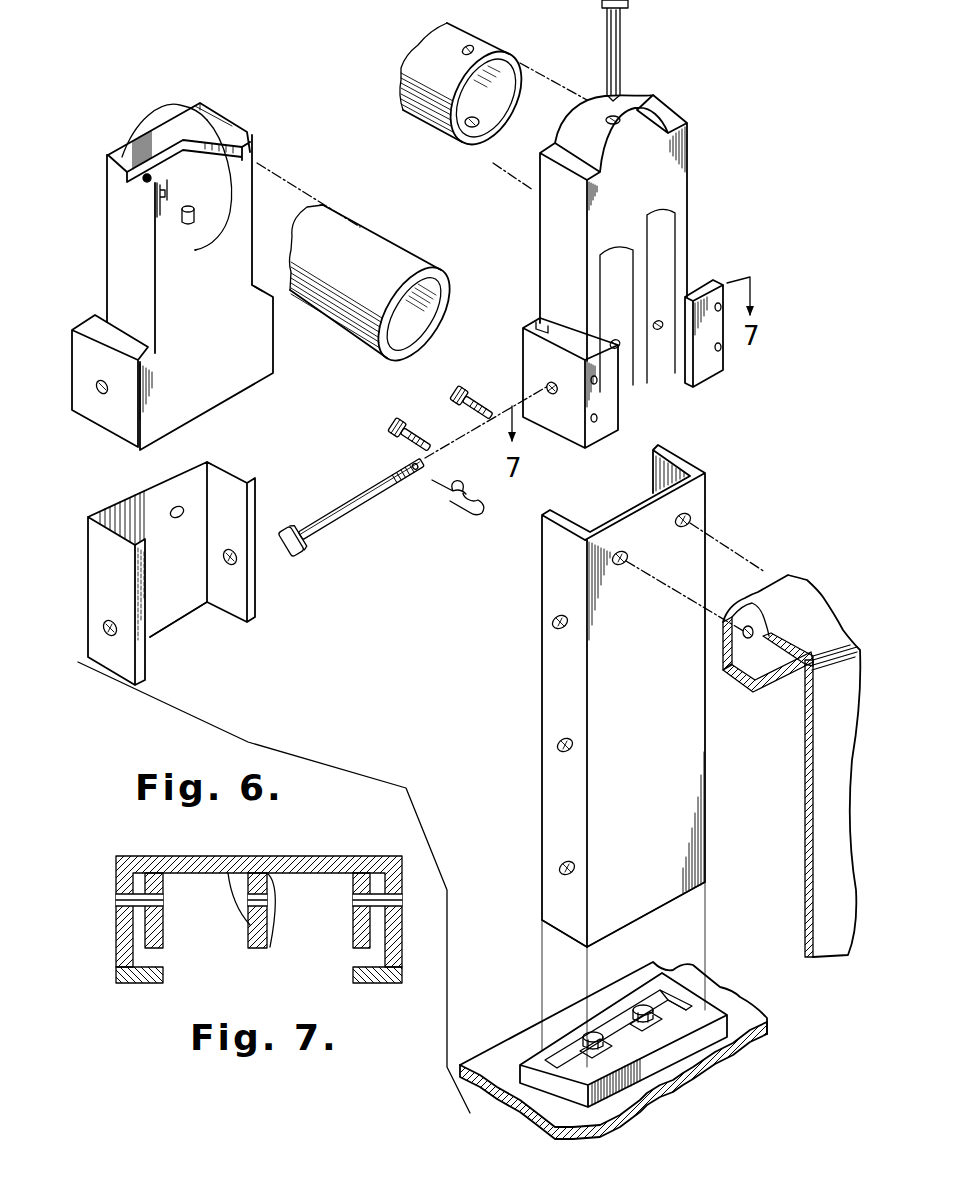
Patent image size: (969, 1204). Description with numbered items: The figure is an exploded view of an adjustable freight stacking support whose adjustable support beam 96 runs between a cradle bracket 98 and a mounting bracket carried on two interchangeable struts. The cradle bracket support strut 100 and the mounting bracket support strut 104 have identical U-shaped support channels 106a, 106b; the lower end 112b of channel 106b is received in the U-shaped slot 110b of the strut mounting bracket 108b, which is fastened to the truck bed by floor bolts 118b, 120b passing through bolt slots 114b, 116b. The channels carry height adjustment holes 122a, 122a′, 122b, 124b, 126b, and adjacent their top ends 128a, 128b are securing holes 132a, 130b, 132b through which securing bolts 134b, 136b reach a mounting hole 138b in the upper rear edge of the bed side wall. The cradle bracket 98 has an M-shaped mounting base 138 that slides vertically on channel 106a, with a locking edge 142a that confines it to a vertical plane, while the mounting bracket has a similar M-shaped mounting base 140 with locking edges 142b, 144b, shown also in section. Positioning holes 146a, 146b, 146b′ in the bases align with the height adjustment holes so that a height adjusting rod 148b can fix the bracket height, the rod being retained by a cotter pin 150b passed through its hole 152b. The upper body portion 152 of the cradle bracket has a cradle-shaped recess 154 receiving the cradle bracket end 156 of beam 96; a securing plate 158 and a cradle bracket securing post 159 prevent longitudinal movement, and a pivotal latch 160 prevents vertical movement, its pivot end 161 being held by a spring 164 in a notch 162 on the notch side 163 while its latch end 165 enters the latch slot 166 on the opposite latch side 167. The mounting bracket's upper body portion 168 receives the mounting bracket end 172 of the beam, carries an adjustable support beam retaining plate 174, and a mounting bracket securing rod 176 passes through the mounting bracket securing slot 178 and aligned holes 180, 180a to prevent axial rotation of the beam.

In FIG. 6, the cradle bracket 98 is at (197, 85).
In FIG. 6, the securing plate 158 is at (170, 127).
In FIG. 6, the pivotal latch 160 is at (199, 129).
In FIG. 6, the pivot end 161 is at (152, 137).
In FIG. 6, the upper body portion 152 is at (99, 225).
In FIG. 6, the latch slot 166 is at (253, 150).
In FIG. 6, the latch side 167 is at (259, 168).
In FIG. 6, the latch end 165 is at (232, 153).
In FIG. 6, the notch side 163 is at (168, 202).
In FIG. 6, the spring 164 is at (147, 182).
In FIG. 6, the notch 162 is at (156, 194).
In FIG. 6, the cradle bracket securing post 159 is at (195, 224).
In FIG. 6, the cradle-shaped recess 154 is at (178, 254).
In FIG. 6, the locking edge 142a is at (74, 315).
In FIG. 6, the M-shaped mounting base 138 is at (233, 367).
In FIG. 6, the positioning hole 146a is at (101, 400).
In FIG. 6, the cradle bracket support strut 100 is at (101, 566).
In FIG. 6, the top end 128a is at (197, 483).
In FIG. 6, the securing hole 132a is at (183, 518).
In FIG. 6, the height adjustment hole 122a′ is at (239, 568).
In FIG. 6, the height adjustment hole 122a is at (111, 640).
In FIG. 6, the U-shaped support channel 106a is at (175, 603).
In FIG. 6, the cradle bracket end 156 is at (362, 268).
In FIG. 6, the adjustable support beam 96 is at (398, 262).
In FIG. 6, the securing bolt 134b is at (392, 425).
In FIG. 6, the securing bolt 136b is at (452, 394).
In FIG. 6, the height adjusting rod 148b is at (360, 508).
In FIG. 6, the hole 152b is at (417, 474).
In FIG. 6, the cotter pin 150b is at (470, 513).
In FIG. 6, the mounting bracket end 172 is at (462, 61).
In FIG. 6, the hole 180 is at (473, 46).
In FIG. 6, the hole 180a is at (467, 129).
In FIG. 6, the mounting bracket securing rod 176 is at (618, 43).
In FIG. 6, the mounting bracket securing slot 178 is at (622, 116).
In FIG. 6, the adjustable support beam retaining plate 174 is at (651, 216).
In FIG. 6, the upper body portion 168 is at (696, 195).
In FIG. 6, the M-shaped mounting base 140 is at (697, 262).
In FIG. 7, the M-shaped mounting base 140 is at (273, 846).
In FIG. 6, the positioning hole 146b is at (548, 382).
In FIG. 7, the positioning hole 146b is at (114, 904).
In FIG. 6, the locking edge 142b is at (603, 430).
In FIG. 7, the locking edge 142b is at (140, 984).
In FIG. 6, the locking edge 144b is at (713, 364).
In FIG. 7, the locking edge 144b is at (380, 985).
In FIG. 6, the positioning hole 146b′ is at (619, 350).
In FIG. 7, the positioning hole 146b′ is at (243, 903).
In FIG. 6, the mounting bracket support strut 104 is at (750, 496).
In FIG. 6, the securing hole 132b is at (692, 520).
In FIG. 6, the securing hole 130b is at (625, 562).
In FIG. 6, the height adjustment hole 122b is at (553, 626).
In FIG. 6, the top end 128b is at (658, 651).
In FIG. 6, the mounting hole 138b is at (750, 638).
In FIG. 6, the U-shaped support channel 106b is at (632, 748).
In FIG. 6, the height adjustment hole 124b is at (559, 753).
In FIG. 6, the lower end 112b is at (664, 855).
In FIG. 6, the height adjustment hole 126b is at (560, 871).
In FIG. 6, the bolt slot 116b is at (658, 990).
In FIG. 6, the floor bolt 120b is at (642, 1004).
In FIG. 6, the bolt slot 114b is at (607, 1050).
In FIG. 6, the floor bolt 118b is at (587, 1040).
In FIG. 6, the strut mounting bracket 108b is at (673, 1017).
In FIG. 6, the U-shaped slot 110b is at (675, 1041).